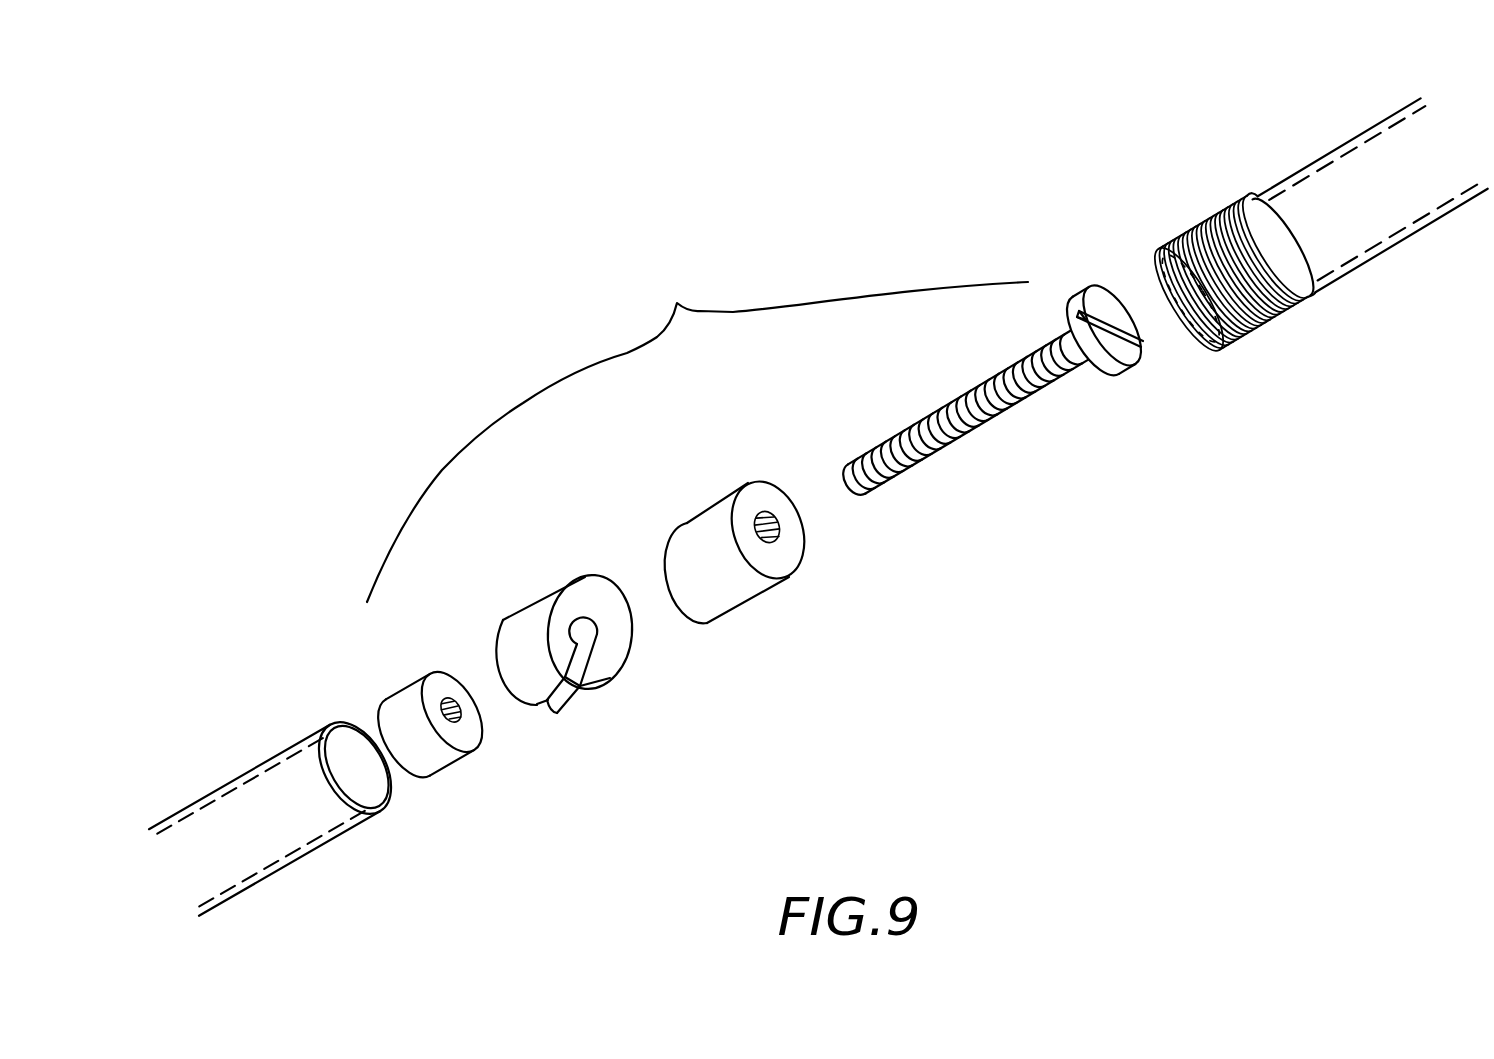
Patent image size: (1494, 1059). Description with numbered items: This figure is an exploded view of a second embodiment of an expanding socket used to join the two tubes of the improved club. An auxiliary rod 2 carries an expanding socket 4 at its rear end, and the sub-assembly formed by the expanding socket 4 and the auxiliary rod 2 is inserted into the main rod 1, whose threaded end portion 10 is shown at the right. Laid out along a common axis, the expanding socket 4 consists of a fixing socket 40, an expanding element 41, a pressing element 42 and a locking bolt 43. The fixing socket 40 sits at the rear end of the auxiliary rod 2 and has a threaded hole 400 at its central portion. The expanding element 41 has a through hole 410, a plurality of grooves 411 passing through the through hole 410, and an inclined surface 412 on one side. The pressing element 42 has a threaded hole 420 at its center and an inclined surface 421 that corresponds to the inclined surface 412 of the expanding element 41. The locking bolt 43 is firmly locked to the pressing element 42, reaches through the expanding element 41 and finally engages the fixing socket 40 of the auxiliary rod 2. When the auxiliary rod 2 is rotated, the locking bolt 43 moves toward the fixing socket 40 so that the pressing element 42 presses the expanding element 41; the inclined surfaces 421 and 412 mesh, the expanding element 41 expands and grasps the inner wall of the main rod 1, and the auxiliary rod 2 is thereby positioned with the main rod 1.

The main rod 1 is at (1322, 152).
The threaded end portion of first tube 10 is at (1275, 323).
The auxiliary rod 2 is at (237, 780).
The expanding socket 4 is at (697, 433).
The fixing socket 40 is at (404, 705).
The threaded hole 400 is at (457, 727).
The expanding element 41 is at (524, 625).
The through hole 410 is at (597, 634).
The grooves 411 is at (556, 714).
The inclined surface 412 is at (590, 598).
The pressing element 42 is at (705, 522).
The threaded hole 420 is at (780, 533).
The inclined surface 421 is at (683, 615).
The locking bolt 43 is at (953, 407).